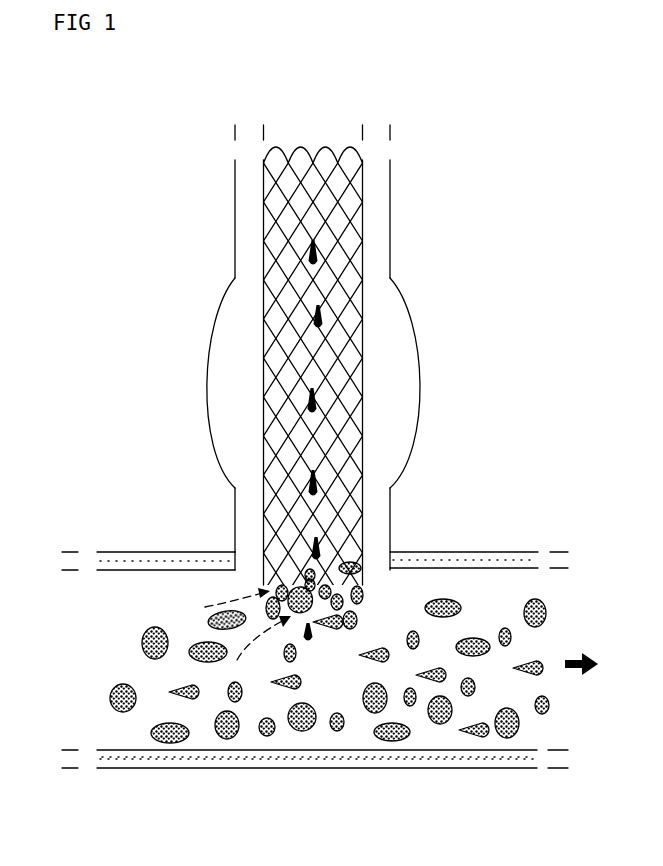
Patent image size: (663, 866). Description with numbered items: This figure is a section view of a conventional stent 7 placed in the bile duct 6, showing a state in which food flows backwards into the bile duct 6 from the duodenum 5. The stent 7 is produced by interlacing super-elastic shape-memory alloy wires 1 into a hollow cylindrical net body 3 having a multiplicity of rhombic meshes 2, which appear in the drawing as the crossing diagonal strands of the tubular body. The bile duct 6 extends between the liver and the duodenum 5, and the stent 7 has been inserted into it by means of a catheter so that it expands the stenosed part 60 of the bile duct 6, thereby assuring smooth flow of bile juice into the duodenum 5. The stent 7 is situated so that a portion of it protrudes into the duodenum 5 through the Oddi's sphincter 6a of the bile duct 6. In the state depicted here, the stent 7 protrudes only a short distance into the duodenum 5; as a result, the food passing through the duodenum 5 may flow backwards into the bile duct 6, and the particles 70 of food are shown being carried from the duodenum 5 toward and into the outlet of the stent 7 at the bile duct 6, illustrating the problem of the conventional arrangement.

The stent 7 is at (356, 358).
The super-elastic shape-memory alloy wires 1 is at (328, 218).
The rhombic meshes 2 is at (325, 302).
The hollow cylindrical net body 3 is at (363, 323).
The bile duct 6 is at (388, 195).
The Oddi's sphincter 6a is at (262, 570).
The stenosed part 60 is at (408, 388).
The duodenum 5 is at (484, 555).
The particles of food 70 is at (170, 742).